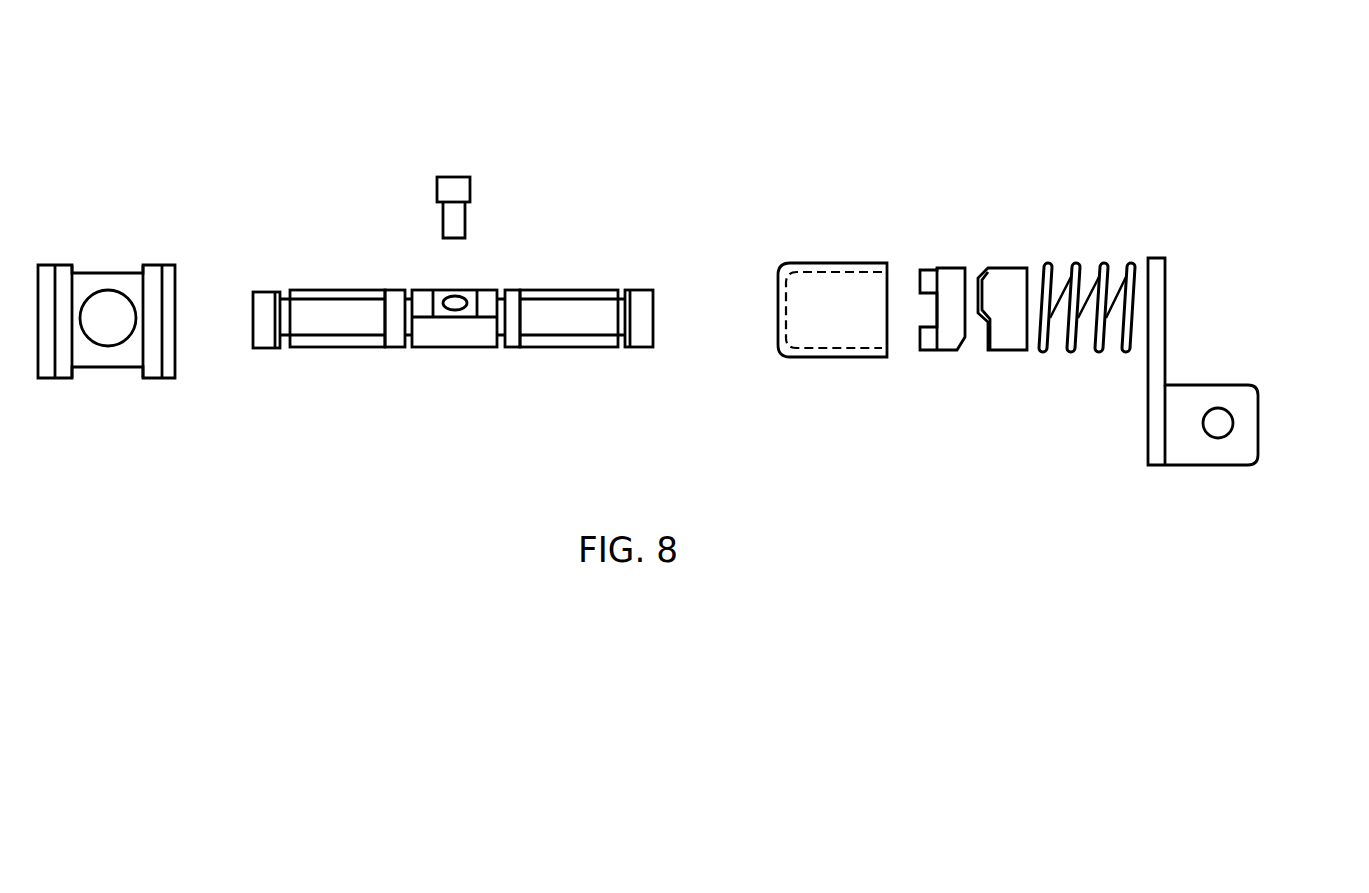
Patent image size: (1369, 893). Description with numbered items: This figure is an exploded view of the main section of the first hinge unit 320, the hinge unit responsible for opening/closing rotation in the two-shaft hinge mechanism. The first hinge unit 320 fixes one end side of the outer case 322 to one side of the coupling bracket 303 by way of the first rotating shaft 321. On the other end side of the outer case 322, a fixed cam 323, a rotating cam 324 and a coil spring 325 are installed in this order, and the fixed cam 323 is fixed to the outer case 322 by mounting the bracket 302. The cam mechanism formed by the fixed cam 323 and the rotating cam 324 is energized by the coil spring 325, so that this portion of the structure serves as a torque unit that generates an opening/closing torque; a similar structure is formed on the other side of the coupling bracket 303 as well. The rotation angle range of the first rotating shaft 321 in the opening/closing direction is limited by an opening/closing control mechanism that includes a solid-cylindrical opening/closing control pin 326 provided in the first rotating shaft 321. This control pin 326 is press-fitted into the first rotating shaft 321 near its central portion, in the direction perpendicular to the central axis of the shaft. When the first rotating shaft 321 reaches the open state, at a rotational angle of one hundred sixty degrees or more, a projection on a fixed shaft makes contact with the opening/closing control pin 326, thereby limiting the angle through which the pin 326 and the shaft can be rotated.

The first hinge unit 320 is at (705, 148).
The coupling bracket 303 is at (148, 343).
The first rotating shaft 321 is at (517, 302).
The opening/closing control pin 326 is at (455, 190).
The outer case 322 is at (818, 285).
The fixed cam 323 is at (952, 330).
The rotating cam 324 is at (1007, 285).
The coil spring 325 is at (1105, 268).
The bracket 302 is at (1227, 400).